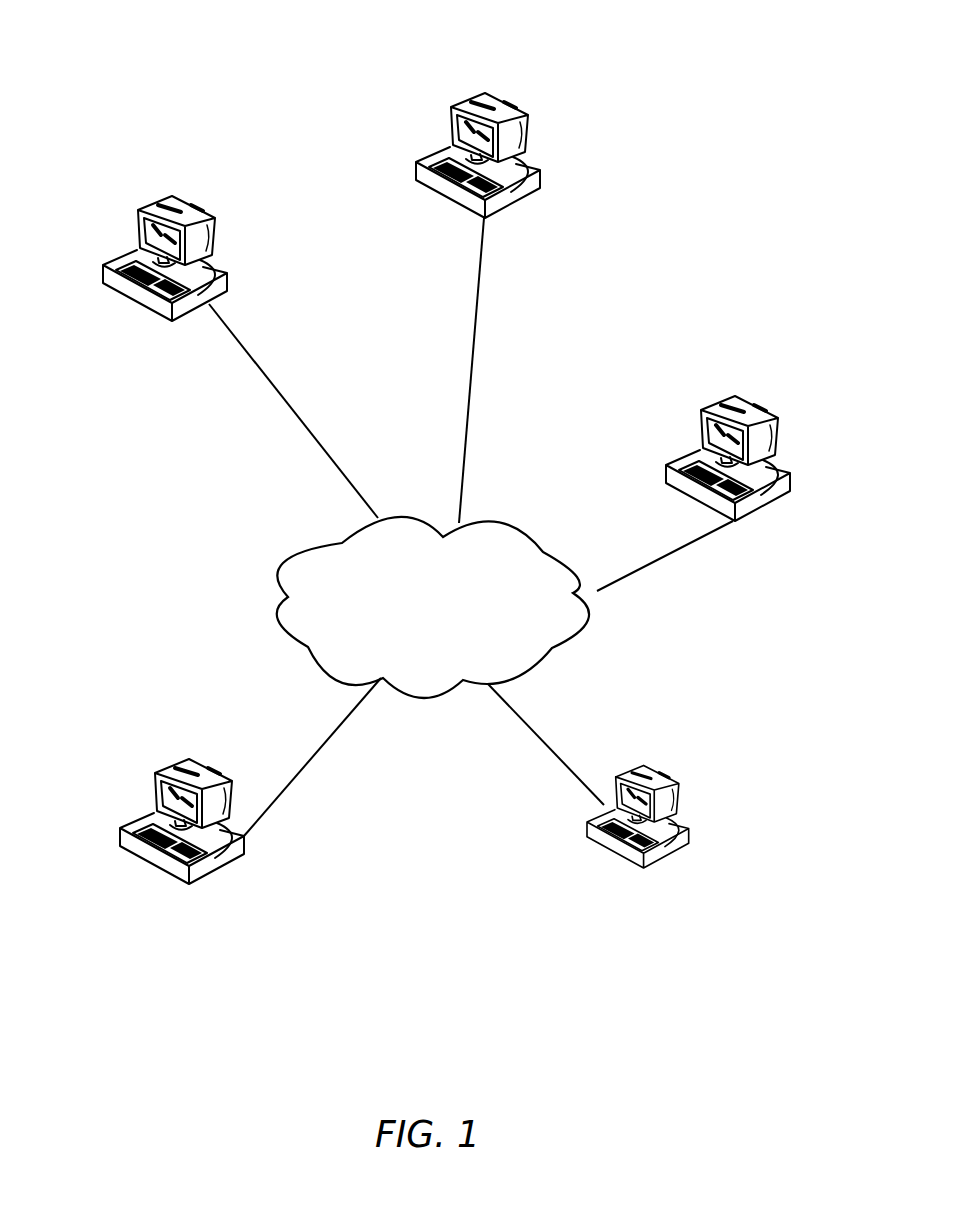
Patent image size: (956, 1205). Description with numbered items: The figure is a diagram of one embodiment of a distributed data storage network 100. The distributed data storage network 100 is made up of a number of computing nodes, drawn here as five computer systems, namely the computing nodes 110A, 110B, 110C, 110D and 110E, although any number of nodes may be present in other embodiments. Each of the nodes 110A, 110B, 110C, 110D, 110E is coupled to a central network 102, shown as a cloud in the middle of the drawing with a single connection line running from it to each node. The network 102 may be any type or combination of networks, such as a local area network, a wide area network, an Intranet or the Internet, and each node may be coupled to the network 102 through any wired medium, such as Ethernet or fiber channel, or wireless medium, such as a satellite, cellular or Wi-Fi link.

The distributed data storage network 100 is at (280, 114).
The network 102 is at (433, 607).
The computing node 110A is at (108, 291).
The computing node 110B is at (541, 180).
The computing node 110C is at (774, 505).
The computing node 110D is at (584, 838).
The computing node 110E is at (292, 886).